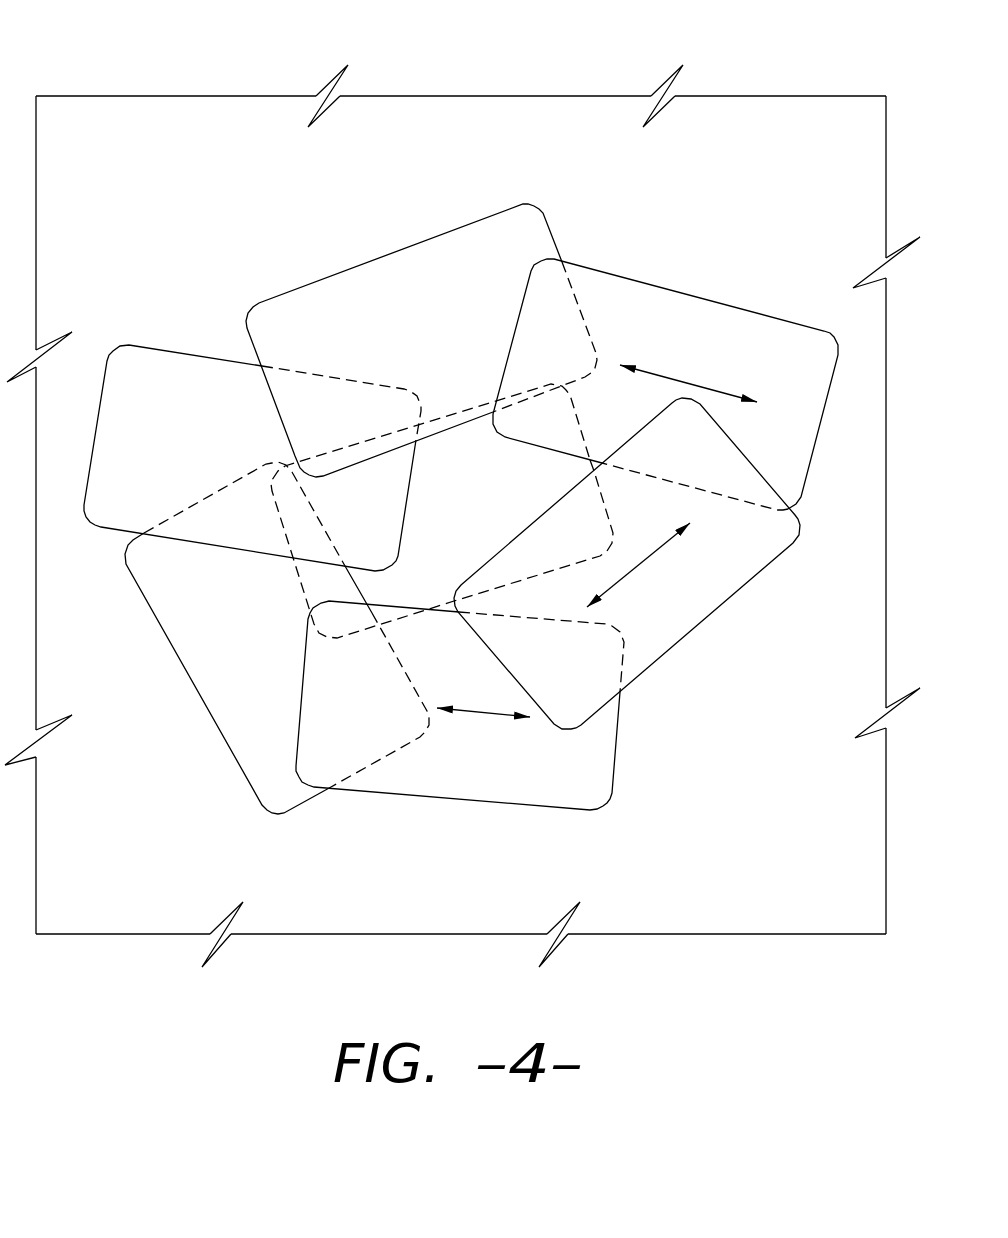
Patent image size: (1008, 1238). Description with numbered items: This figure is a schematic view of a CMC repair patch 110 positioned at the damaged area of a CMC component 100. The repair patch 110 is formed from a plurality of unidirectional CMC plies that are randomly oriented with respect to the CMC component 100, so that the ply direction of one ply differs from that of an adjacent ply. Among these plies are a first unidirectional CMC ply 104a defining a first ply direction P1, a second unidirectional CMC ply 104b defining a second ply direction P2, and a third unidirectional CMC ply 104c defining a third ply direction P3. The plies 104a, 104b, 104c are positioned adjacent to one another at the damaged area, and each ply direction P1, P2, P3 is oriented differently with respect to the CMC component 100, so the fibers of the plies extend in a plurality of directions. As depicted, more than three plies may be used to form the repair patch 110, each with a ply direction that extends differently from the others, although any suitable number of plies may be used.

The CMC component 100 is at (185, 135).
The CMC repair patch 110 is at (260, 263).
The first unidirectional CMC ply 104a is at (663, 283).
The second unidirectional CMC ply 104b is at (660, 627).
The third unidirectional CMC ply 104c is at (457, 770).
The first ply direction P1 is at (680, 380).
The second ply direction P2 is at (640, 563).
The third ply direction P3 is at (487, 713).